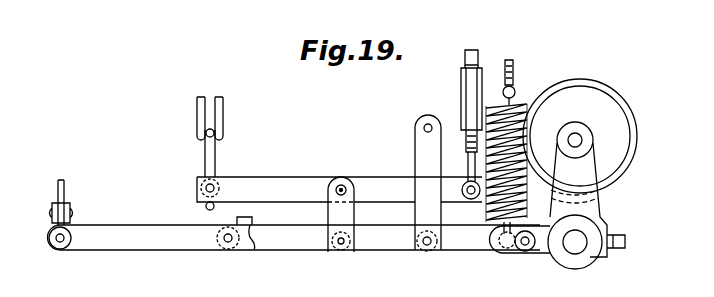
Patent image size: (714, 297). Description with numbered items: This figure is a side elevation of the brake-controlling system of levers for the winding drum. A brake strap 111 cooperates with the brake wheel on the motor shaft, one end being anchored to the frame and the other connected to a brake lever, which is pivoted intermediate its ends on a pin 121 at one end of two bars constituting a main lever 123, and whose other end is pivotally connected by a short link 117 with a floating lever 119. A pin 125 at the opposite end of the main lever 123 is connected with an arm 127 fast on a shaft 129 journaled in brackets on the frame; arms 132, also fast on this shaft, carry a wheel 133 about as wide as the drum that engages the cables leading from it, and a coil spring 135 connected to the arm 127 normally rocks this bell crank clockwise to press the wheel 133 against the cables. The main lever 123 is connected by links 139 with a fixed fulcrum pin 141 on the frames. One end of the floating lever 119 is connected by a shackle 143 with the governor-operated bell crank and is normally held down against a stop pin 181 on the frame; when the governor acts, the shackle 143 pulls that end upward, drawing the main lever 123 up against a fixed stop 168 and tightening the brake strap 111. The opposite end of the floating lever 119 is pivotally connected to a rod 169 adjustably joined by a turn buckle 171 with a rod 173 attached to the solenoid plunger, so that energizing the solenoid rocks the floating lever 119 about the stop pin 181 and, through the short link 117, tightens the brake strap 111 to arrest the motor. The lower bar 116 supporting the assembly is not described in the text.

The brake strap 111 is at (67, 192).
The lower bar 116 is at (170, 252).
The short link 117 is at (338, 213).
The floating lever 119 is at (288, 181).
The pin 121 is at (226, 246).
The main lever 123 is at (389, 243).
The pin 125 is at (428, 251).
The arm 127 is at (540, 258).
The shaft 129 is at (574, 244).
The arms 132 is at (588, 206).
The wheel 133 is at (593, 98).
The coil spring 135 is at (497, 223).
The links 139 is at (424, 148).
The fixed fulcrum pin 141 is at (425, 126).
The shackle 143 is at (222, 113).
The fixed stop 168 is at (252, 250).
The rod 169 is at (467, 140).
The turn buckle 171 is at (462, 86).
The rod 173 is at (466, 58).
The stop pin 181 is at (206, 207).